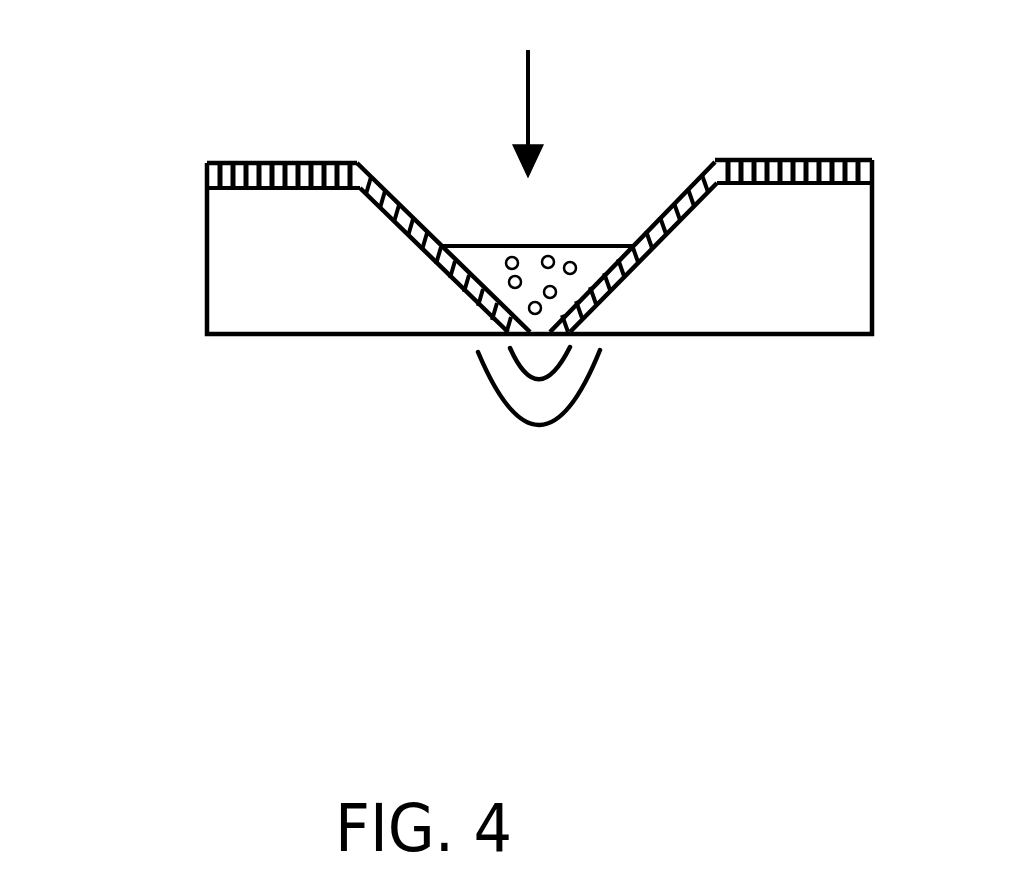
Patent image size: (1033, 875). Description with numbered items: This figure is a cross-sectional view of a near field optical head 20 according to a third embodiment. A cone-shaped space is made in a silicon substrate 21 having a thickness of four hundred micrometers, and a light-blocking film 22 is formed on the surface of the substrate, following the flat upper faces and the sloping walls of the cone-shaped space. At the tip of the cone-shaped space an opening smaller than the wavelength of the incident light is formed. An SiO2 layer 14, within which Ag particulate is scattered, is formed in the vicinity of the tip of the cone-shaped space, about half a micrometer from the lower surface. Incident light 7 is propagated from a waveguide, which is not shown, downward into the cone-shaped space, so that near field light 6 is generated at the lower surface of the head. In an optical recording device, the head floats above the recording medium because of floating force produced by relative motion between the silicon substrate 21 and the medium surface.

The near field light 6 is at (573, 397).
The incident light 7 is at (528, 88).
The SiO2 layer 14 is at (598, 252).
The near field optical head 20 is at (205, 257).
The silicon substrate 21 is at (300, 302).
The light-blocking film 22 is at (287, 165).